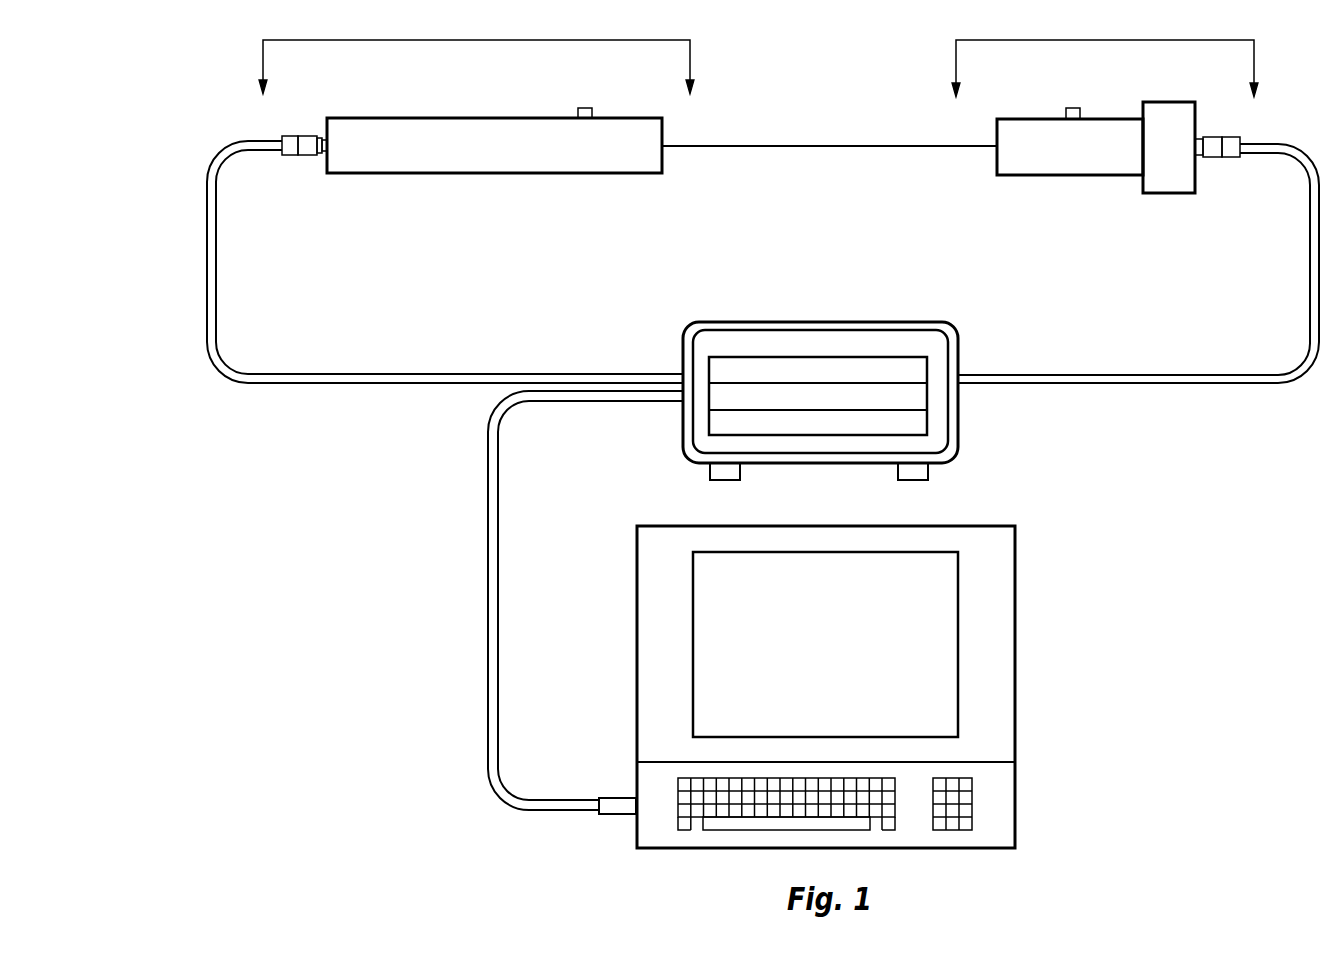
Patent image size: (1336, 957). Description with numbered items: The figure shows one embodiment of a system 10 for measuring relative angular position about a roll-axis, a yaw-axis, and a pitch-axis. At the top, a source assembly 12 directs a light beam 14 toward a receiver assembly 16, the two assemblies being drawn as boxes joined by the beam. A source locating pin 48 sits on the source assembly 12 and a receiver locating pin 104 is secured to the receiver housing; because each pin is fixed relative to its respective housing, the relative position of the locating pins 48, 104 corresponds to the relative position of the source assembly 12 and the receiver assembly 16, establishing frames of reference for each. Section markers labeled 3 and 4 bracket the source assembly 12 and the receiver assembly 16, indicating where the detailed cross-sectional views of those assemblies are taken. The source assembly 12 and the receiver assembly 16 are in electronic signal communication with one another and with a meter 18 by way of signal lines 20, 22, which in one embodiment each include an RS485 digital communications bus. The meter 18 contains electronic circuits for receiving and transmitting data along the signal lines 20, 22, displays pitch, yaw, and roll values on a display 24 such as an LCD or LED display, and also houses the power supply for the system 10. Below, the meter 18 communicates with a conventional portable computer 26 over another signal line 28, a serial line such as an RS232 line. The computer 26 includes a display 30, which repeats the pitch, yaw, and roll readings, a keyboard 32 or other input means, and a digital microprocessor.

The system 10 is at (150, 212).
The section view indicator FIG. 3 is at (474, 81).
The section view indicator FIG. 4 is at (1102, 81).
The source assembly 12 is at (377, 127).
The source locating pin 48 is at (575, 113).
The light beam 14 is at (803, 146).
The receiver assembly 16 is at (1027, 125).
The receiver locating pin 104 is at (1085, 114).
The meter 18 is at (821, 370).
The signal line 20 is at (353, 378).
The signal line 22 is at (1068, 380).
The display 24 is at (797, 367).
The portable computer 26 is at (868, 696).
The signal line 28 is at (493, 691).
The display 30 is at (945, 713).
The keyboard 32 is at (875, 810).